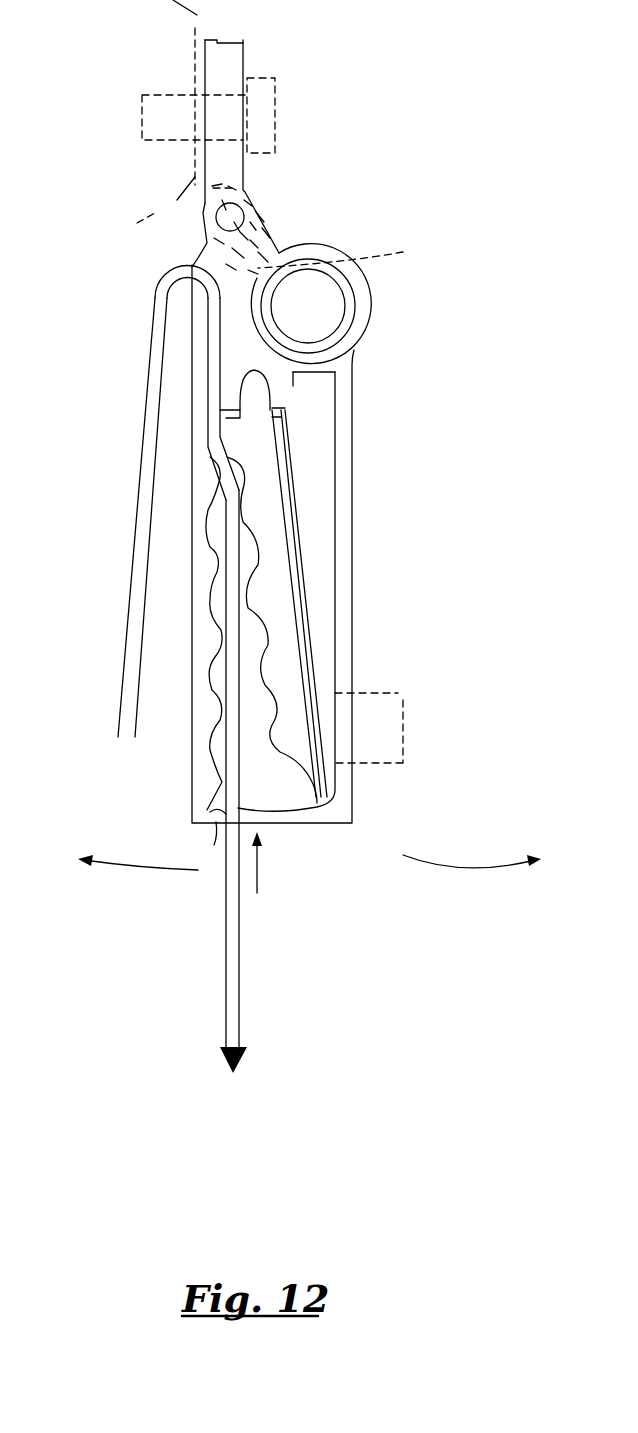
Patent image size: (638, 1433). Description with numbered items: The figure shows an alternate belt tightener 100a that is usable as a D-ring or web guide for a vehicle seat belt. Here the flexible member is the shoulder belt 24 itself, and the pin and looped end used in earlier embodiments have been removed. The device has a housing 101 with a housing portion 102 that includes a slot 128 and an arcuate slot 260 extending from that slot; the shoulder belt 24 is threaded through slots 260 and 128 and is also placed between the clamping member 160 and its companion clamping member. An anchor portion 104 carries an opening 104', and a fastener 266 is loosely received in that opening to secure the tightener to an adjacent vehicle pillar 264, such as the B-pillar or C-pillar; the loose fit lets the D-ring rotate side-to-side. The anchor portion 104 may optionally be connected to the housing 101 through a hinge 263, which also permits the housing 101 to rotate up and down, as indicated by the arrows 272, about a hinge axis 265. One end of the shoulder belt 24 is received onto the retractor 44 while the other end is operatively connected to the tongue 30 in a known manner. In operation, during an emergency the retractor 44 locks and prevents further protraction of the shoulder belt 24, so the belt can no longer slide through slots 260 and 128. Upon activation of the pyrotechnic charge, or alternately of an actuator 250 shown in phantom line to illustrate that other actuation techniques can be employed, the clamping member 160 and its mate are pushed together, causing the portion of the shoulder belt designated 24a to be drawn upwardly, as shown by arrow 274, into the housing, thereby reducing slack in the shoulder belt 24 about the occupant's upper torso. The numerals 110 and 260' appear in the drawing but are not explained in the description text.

The housing 101 is at (363, 373).
The housing portion 102 is at (263, 597).
The anchor portion 104 is at (289, 115).
The opening 104' is at (282, 118).
The lower hook 110 is at (217, 827).
The slot 128 is at (207, 392).
The clamping member 160 is at (212, 627).
The shoulder belt portion 24 is at (247, 1007).
The portion of the shoulder belt 24a is at (242, 928).
The tongue 30 is at (233, 1075).
The retractor 44 is at (122, 747).
The actuator 250 is at (380, 727).
The arcuate slot 260 is at (164, 225).
The wedge alternative position 260' is at (362, 254).
The hinge 263 is at (257, 213).
The pillar 264 is at (170, 8).
The hinge axis 265 is at (232, 216).
The fastener 266 is at (137, 112).
The arrows 272 is at (118, 877).
The arrow 274 is at (263, 862).
The belt tightener 100a is at (543, 73).